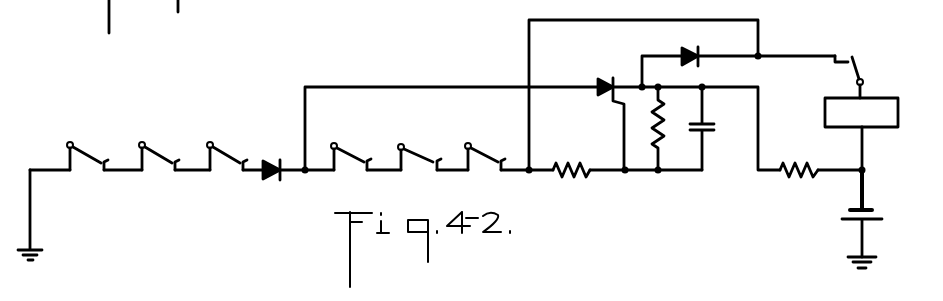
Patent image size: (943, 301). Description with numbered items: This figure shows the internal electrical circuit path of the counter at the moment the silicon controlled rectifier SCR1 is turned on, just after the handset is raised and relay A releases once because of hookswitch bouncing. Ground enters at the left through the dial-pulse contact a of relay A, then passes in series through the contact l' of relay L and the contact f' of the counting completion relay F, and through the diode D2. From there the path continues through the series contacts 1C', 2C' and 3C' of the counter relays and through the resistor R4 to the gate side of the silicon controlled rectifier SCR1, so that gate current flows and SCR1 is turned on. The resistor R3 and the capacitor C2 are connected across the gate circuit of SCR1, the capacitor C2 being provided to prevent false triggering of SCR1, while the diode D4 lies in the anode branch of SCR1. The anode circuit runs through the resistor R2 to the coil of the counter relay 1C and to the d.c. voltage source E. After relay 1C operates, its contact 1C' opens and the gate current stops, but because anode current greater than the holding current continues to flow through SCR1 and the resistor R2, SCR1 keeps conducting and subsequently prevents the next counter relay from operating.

The contact a is at (87, 144).
The contact of relay L l' is at (159, 145).
The contact of relay F f' is at (227, 145).
The diode D2 is at (274, 155).
The contact of relay 1C 1C' is at (351, 146).
The contact of relay 2C 2C' is at (419, 146).
The contact of relay 3C 3C' is at (485, 146).
The resistor R4 is at (571, 155).
The silicon controlled rectifier SCR1 is at (601, 112).
The diode D4 is at (685, 46).
The resistor R3 is at (671, 128).
The capacitor C2 is at (717, 128).
The coil of counter relay 1C is at (866, 127).
The resistor R2 is at (799, 183).
The d.c. voltage source E is at (882, 219).